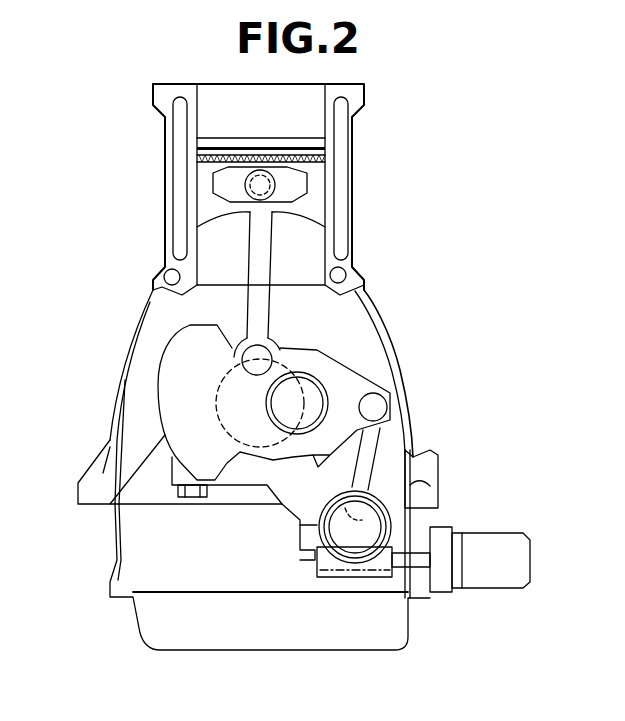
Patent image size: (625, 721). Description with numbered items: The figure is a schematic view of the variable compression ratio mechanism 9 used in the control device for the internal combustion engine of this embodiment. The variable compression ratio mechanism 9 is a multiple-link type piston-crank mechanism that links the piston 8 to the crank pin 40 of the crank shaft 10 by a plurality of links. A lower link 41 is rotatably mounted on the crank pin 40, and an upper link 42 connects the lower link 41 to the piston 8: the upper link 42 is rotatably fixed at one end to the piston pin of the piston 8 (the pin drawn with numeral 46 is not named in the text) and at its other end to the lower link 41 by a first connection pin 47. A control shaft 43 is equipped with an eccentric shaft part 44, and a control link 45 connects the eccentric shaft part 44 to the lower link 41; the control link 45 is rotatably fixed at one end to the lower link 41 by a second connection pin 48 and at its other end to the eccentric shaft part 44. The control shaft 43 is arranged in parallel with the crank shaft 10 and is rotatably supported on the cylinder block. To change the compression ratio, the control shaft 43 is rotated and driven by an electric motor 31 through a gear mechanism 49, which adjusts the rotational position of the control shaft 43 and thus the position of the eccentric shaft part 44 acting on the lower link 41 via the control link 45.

The piston 8 is at (317, 193).
The variable compression ratio mechanism 9 is at (368, 333).
The crank shaft 10 is at (180, 425).
The electric motor 31 is at (483, 577).
The crank pin 40 is at (280, 405).
The lower link 41 is at (350, 382).
The upper link 42 is at (250, 256).
The control shaft 43 is at (372, 522).
The eccentric shaft part 44 is at (354, 500).
The control link 45 is at (372, 444).
The piston pin 46 is at (246, 181).
The first connection pin 47 is at (280, 360).
The second connection pin 48 is at (373, 407).
The gear mechanism 49 is at (350, 585).